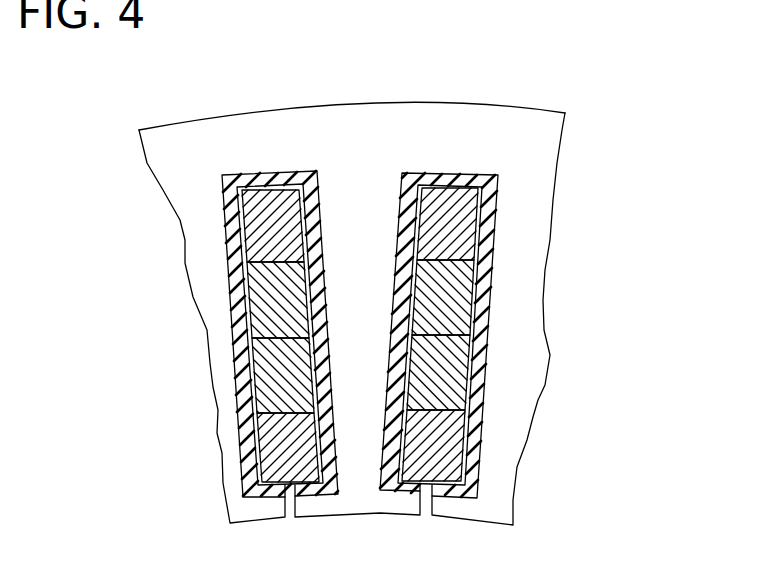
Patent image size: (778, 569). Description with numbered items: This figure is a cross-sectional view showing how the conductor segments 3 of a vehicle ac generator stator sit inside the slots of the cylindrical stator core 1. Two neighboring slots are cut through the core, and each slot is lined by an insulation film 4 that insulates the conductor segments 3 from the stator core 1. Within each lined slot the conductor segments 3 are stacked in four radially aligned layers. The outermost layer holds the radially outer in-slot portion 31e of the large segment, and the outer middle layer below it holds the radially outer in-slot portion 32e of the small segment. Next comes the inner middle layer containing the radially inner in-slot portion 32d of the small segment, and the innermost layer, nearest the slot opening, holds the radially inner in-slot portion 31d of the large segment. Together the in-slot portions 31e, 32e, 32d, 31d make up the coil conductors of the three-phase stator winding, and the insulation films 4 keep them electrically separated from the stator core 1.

The stator core 1 is at (378, 127).
The conductor segments 3 is at (477, 335).
The insulation films 4 is at (498, 181).
The radially outer in-slot portion of large segment 31e is at (468, 243).
The radially outer in-slot portion of small segment 32e is at (465, 283).
The radially inner in-slot portion of small segment 32d is at (448, 377).
The radially inner in-slot portion of large segment 31d is at (453, 446).